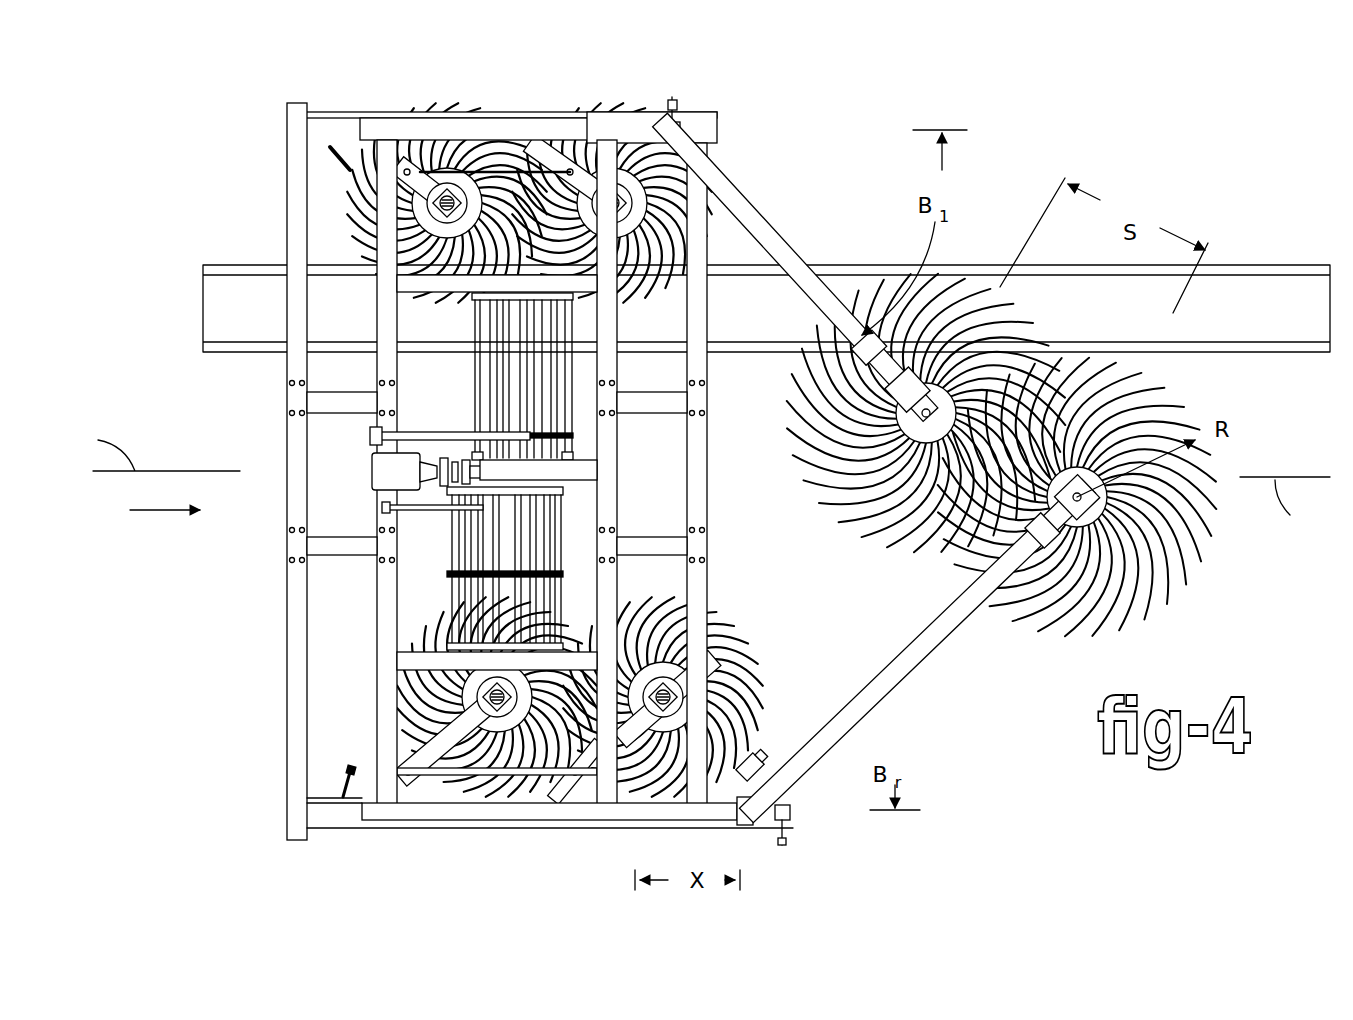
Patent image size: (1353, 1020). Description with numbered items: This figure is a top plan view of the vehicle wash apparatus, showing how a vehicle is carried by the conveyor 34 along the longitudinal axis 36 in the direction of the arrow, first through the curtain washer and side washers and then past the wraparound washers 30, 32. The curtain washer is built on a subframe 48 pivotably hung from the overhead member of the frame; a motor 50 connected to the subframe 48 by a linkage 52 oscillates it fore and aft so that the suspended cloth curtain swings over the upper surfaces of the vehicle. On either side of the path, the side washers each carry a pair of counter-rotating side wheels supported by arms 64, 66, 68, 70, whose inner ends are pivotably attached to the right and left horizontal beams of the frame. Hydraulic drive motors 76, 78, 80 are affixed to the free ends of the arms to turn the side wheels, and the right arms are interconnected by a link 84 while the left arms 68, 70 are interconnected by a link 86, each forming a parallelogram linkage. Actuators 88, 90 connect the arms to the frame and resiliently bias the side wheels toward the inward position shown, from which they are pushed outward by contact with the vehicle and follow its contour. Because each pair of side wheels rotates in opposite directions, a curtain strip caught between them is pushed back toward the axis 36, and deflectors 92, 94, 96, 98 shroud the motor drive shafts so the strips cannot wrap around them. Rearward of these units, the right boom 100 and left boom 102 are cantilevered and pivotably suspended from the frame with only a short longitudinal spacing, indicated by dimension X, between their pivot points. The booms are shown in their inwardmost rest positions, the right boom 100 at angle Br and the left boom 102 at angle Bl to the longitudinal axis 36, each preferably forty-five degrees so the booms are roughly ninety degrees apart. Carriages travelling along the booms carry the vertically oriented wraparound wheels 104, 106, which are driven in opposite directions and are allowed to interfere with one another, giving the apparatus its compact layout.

The wraparound washer 30 is at (905, 690).
The wraparound washer 32 is at (782, 250).
The conveyor 34 is at (1240, 355).
The longitudinal axis 36 is at (694, 484).
The subframe 48 is at (447, 582).
The motor 50 is at (380, 465).
The linkage 52 is at (443, 432).
The arm 64 is at (415, 775).
The arm 66 is at (583, 777).
The arm 68 is at (432, 150).
The arm 70 is at (552, 157).
The hydraulic drive motor 76 is at (483, 690).
The hydraulic drive motor 78 is at (673, 695).
The hydraulic drive motor 80 is at (692, 225).
The link 84 is at (457, 780).
The link 86 is at (455, 150).
The actuator 88 is at (520, 787).
The actuator 90 is at (512, 152).
The deflector 92 is at (413, 685).
The deflector 94 is at (683, 623).
The deflector 96 is at (437, 207).
The deflector 98 is at (703, 182).
The right boom 100 is at (935, 650).
The left boom 102 is at (717, 190).
The right wraparound wheel 104 is at (1180, 587).
The left wraparound wheel 106 is at (842, 512).